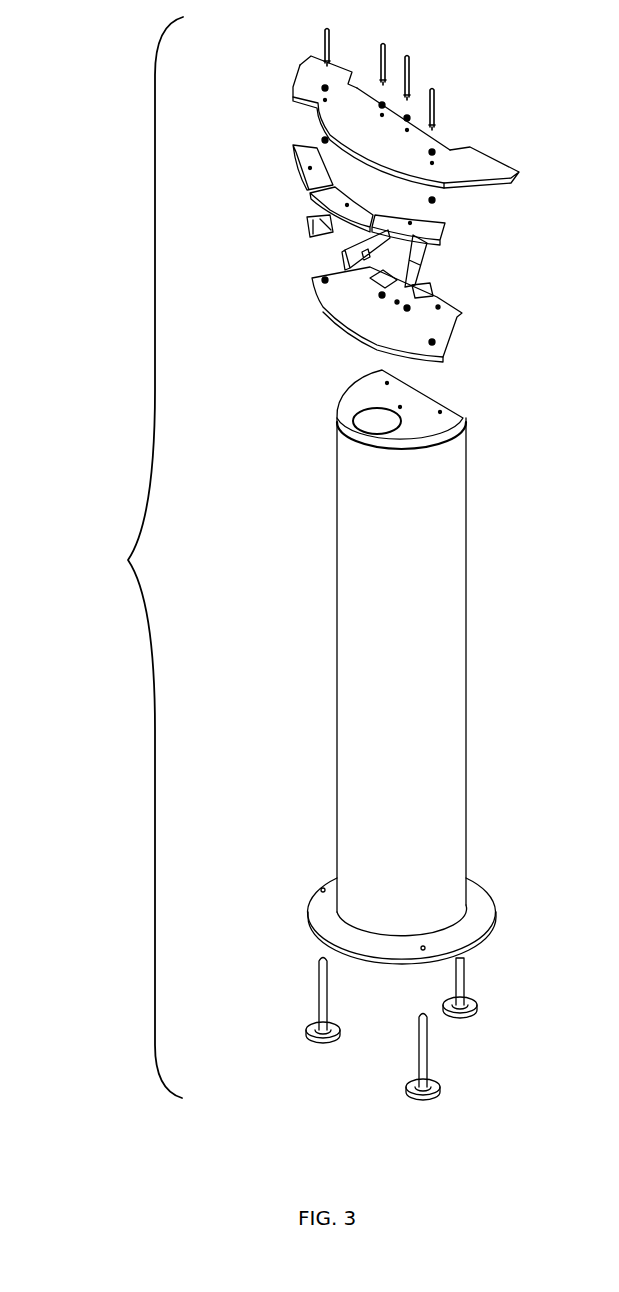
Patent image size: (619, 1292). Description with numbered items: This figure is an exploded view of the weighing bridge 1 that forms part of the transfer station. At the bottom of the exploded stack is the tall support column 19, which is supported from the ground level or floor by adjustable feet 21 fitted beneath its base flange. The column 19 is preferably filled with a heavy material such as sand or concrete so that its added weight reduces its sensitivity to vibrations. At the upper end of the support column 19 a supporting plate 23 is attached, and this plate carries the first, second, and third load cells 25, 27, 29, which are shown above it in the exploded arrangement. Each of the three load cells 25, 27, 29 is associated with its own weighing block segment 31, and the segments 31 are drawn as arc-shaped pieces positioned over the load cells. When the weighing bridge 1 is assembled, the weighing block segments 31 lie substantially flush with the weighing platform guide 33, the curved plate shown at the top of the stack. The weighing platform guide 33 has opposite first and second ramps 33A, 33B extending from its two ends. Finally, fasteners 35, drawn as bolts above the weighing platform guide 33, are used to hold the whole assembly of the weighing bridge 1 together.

The weighing bridge 1 is at (107, 565).
The support column 19 is at (343, 641).
The adjustable feet 21 is at (430, 1051).
The supporting plate 23 is at (342, 307).
The first load cell 25 is at (305, 227).
The second load cell 27 is at (342, 260).
The third load cell 29 is at (427, 267).
The weighing block segment 31 is at (308, 157).
The weighing platform guide 33 is at (391, 99).
The first ramp 33A is at (312, 55).
The second ramp 33B is at (487, 157).
The fasteners 35 is at (438, 98).